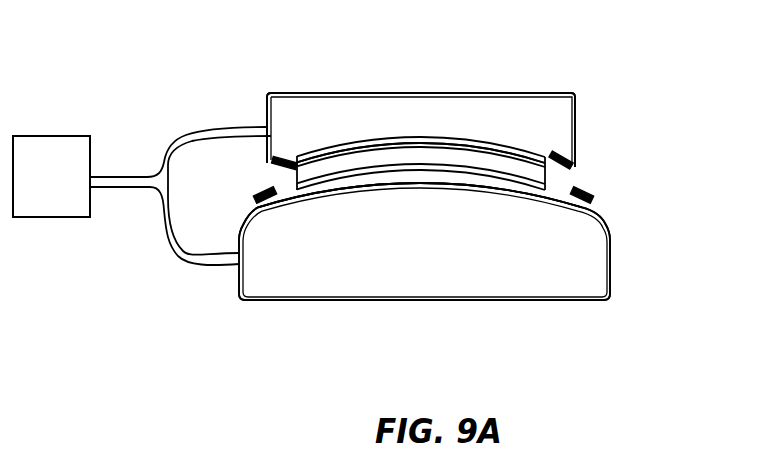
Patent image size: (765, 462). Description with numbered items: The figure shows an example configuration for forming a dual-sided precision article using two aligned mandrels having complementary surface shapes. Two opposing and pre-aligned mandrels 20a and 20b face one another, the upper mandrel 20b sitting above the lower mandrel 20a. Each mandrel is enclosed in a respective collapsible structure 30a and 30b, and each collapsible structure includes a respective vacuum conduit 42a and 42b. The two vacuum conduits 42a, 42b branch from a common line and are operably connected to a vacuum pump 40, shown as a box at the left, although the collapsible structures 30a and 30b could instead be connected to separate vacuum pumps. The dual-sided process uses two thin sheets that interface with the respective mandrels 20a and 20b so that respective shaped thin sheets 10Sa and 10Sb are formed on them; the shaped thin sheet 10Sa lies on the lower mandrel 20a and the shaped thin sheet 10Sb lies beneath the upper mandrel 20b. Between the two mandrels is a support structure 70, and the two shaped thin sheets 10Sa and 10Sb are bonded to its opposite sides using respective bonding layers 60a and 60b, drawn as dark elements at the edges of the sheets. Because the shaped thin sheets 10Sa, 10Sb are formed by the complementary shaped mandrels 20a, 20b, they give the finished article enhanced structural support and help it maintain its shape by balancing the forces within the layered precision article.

The vacuum pump 40 is at (68, 191).
The vacuum conduit 42a is at (166, 247).
The vacuum conduit 42b is at (208, 129).
The mandrel 20a is at (452, 258).
The mandrel 20b is at (442, 128).
The collapsible structure 30a is at (611, 250).
The collapsible structure 30b is at (576, 112).
The bonding layer 60a is at (312, 183).
The bonding layer 60b is at (549, 157).
The support structure 70 is at (353, 163).
The shaped thin sheet 10Sa is at (540, 192).
The shaped thin sheet 10Sb is at (532, 153).